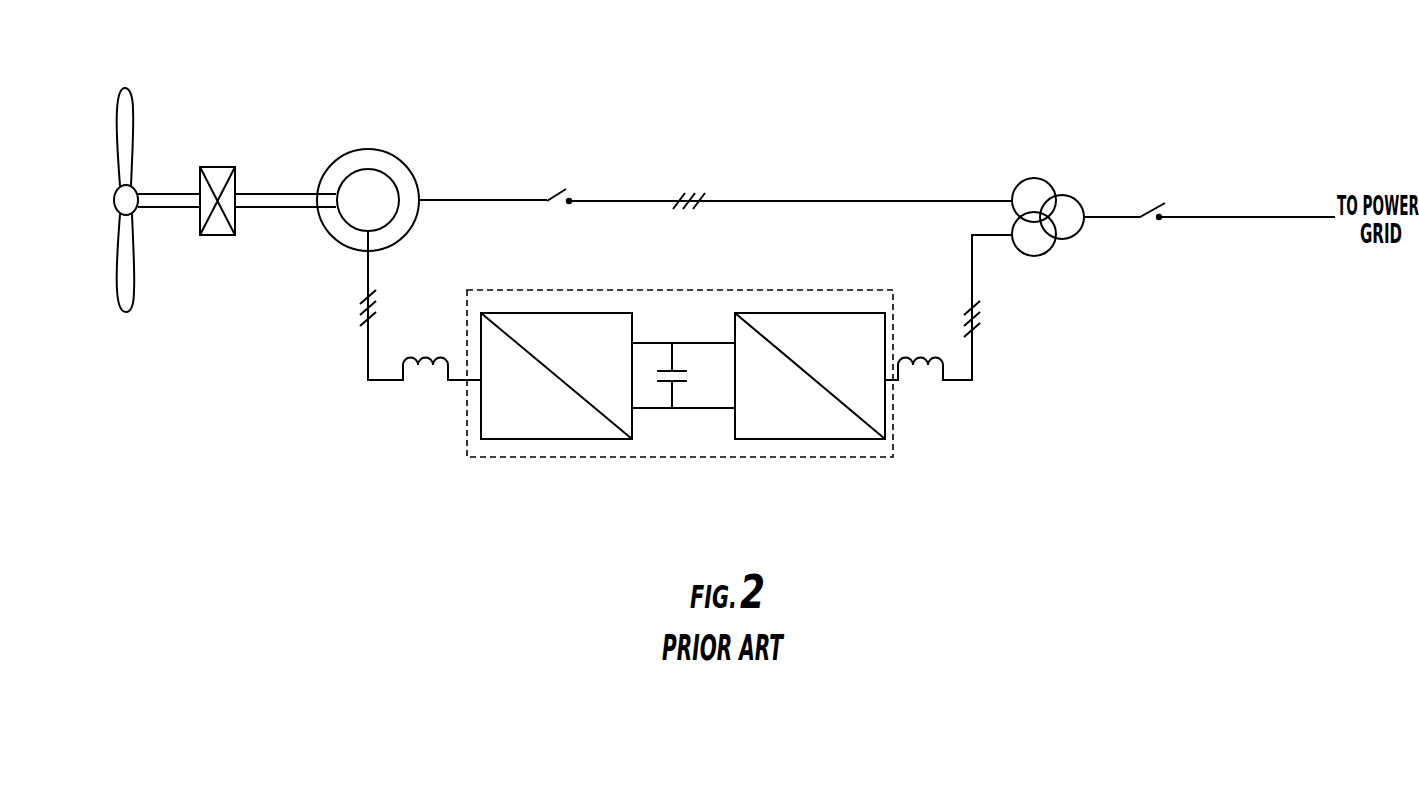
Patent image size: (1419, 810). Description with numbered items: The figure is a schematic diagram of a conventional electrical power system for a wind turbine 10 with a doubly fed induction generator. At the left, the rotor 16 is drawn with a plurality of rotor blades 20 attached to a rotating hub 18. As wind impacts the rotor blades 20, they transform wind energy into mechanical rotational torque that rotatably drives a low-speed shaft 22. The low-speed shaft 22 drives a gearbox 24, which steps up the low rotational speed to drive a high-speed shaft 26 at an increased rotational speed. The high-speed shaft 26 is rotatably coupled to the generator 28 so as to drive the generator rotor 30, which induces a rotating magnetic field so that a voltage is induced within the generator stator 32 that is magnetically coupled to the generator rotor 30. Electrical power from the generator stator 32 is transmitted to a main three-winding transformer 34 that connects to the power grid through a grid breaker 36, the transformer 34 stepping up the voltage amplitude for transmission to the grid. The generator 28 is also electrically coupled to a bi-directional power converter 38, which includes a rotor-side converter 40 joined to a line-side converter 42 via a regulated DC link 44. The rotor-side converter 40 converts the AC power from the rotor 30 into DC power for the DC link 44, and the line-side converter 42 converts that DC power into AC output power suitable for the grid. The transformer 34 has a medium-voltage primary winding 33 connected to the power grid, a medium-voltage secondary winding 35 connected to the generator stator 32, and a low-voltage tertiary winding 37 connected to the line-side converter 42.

The wind turbine 10 is at (130, 67).
The rotor 16 is at (105, 207).
The rotating hub 18 is at (113, 205).
The rotor blades 20 is at (127, 122).
The low-speed shaft 22 is at (152, 203).
The gearbox 24 is at (214, 167).
The high-speed shaft 26 is at (250, 203).
The generator 28 is at (367, 148).
The generator rotor 30 is at (393, 180).
The generator stator 32 is at (352, 248).
The primary winding 33 is at (1070, 238).
The three-winding transformer 34 is at (1062, 150).
The secondary winding 35 is at (1018, 190).
The grid breaker 36 is at (1170, 204).
The tertiary winding 37 is at (1043, 257).
The bi-directional power converter 38 is at (705, 288).
The rotor-side converter 40 is at (540, 440).
The line-side converter 42 is at (825, 440).
The DC link 44 is at (691, 397).